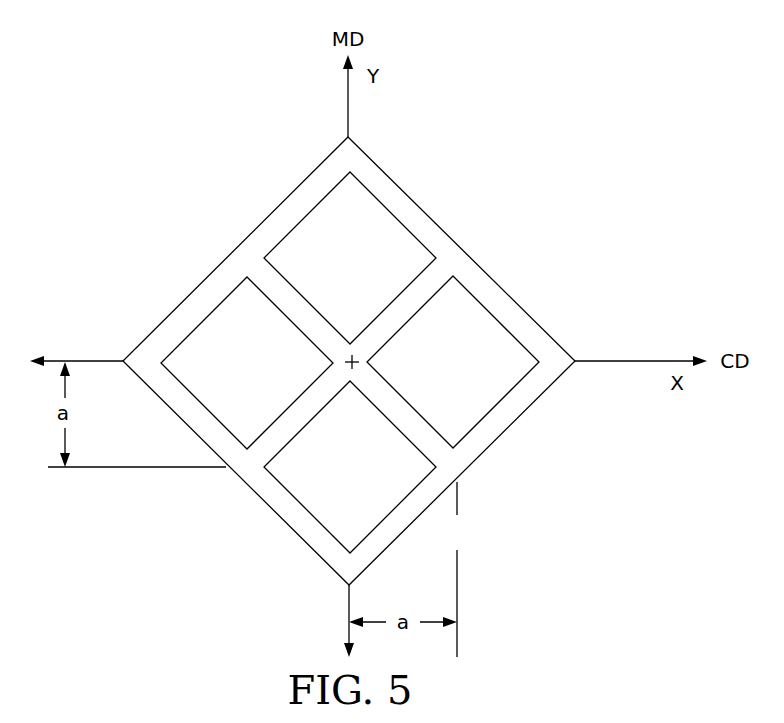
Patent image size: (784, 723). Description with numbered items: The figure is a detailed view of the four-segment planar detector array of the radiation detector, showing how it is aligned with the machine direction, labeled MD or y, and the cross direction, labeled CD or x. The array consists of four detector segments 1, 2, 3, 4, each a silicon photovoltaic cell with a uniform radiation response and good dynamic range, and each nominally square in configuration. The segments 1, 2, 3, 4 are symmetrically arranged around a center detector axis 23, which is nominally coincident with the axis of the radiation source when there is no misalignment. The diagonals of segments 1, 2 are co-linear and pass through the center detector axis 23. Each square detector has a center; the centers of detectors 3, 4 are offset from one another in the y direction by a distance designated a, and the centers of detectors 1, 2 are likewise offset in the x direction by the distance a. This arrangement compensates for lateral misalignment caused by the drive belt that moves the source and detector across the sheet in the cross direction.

The detector segment 1 is at (453, 362).
The detector segment 2 is at (247, 363).
The detector segment 3 is at (350, 258).
The detector segment 4 is at (350, 467).
The center detector axis 23 is at (358, 355).